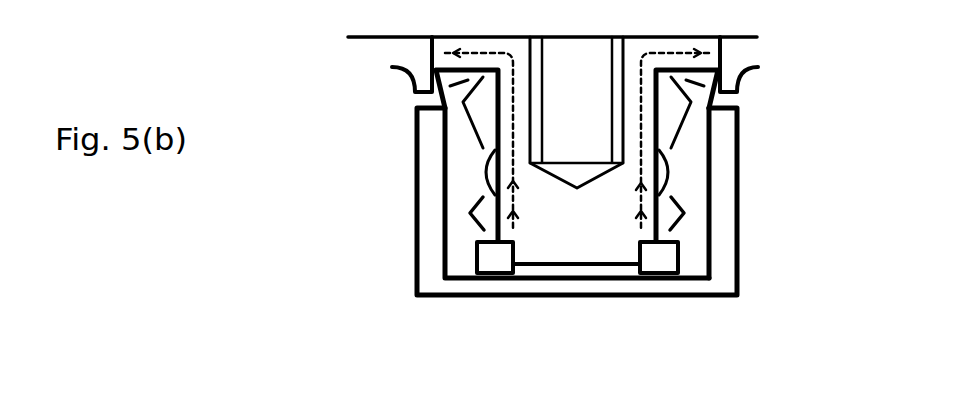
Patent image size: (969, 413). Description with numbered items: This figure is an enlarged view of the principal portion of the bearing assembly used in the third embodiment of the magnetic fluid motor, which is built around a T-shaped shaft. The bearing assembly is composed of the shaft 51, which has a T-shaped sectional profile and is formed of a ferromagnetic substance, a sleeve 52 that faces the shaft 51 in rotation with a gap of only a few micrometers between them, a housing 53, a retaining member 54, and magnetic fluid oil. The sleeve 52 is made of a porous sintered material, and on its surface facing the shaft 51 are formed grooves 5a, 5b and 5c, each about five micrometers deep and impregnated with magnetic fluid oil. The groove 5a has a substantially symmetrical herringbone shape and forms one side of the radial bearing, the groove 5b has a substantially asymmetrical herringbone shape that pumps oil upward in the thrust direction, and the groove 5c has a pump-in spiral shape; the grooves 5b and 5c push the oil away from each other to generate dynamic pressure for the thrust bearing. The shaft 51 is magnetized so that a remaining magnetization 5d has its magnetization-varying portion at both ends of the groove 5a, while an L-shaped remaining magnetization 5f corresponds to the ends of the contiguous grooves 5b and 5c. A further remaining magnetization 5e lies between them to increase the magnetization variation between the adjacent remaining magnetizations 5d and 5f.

The shaft 51 is at (583, 232).
The sleeve 52 is at (693, 178).
The housing 53 is at (430, 253).
The retaining member 54 is at (658, 258).
The groove 5a is at (683, 225).
The groove 5b is at (687, 125).
The groove 5c is at (695, 85).
The remaining magnetization 5d is at (475, 253).
The remaining magnetization 5e is at (512, 168).
The remaining magnetization 5f is at (512, 88).